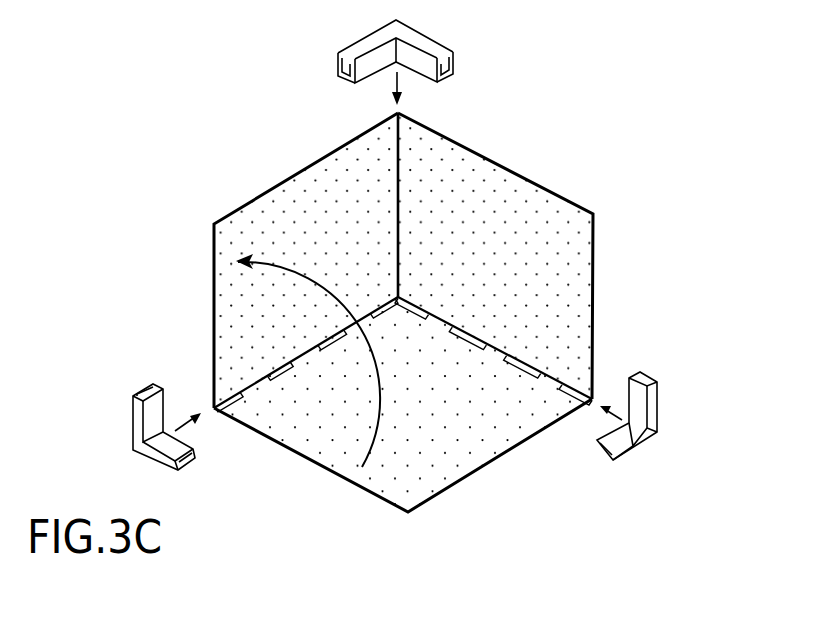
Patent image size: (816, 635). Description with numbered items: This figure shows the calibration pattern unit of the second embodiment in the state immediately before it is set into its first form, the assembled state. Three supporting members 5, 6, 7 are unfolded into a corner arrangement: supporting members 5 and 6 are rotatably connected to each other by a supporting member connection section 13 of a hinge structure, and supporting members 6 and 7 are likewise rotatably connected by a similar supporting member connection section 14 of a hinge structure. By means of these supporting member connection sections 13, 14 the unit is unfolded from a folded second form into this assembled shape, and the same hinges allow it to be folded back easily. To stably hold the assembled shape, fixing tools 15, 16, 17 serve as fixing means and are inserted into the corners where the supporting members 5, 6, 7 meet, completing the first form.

The supporting member 5 is at (310, 207).
The supporting member 6 is at (518, 205).
The supporting member 7 is at (497, 425).
The supporting member connection section 13 is at (278, 363).
The supporting member connection section 14 is at (507, 348).
The fixing tool 15 is at (133, 432).
The fixing tool 16 is at (650, 407).
The fixing tool 17 is at (432, 45).